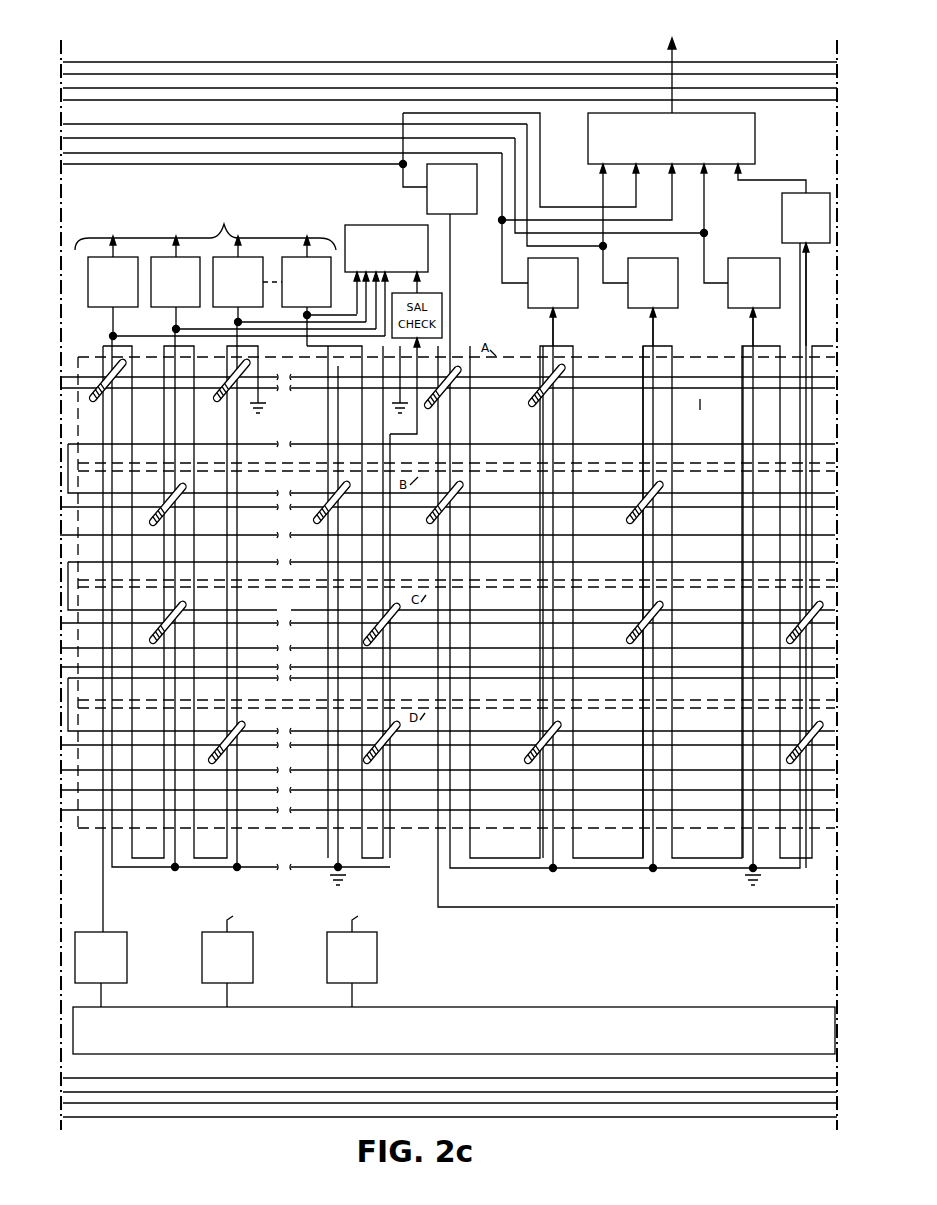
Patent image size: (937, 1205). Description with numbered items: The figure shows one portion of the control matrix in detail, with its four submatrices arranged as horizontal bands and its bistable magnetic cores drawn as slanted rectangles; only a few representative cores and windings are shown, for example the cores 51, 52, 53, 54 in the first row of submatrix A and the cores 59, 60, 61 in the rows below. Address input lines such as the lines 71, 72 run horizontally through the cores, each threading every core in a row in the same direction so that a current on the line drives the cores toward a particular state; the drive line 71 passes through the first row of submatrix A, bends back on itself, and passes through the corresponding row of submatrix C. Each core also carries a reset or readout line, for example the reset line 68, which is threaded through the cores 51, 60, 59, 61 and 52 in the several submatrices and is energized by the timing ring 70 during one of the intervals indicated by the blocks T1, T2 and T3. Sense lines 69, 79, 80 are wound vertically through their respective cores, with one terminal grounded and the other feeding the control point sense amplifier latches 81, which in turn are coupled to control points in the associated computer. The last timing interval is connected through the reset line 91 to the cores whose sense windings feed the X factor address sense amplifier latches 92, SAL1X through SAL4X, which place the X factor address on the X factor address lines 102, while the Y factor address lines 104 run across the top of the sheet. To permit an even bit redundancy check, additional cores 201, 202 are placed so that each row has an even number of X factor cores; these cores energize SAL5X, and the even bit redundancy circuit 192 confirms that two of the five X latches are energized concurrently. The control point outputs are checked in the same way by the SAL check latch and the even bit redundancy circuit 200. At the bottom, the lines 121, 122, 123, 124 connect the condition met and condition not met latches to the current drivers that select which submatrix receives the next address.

The Y factor address lines 104 is at (202, 70).
The X factor address lines 102 is at (298, 126).
The even bit redundancy circuit 192 is at (755, 136).
The X factor address sense amplifier latches 92 is at (427, 210).
The even bit redundancy circuit 200 is at (392, 224).
The control point sense amplifier latches 81 is at (312, 237).
The sense line 69 is at (112, 330).
The sense line 79 is at (178, 316).
The sense line 80 is at (240, 320).
The reset line 68 is at (131, 435).
The address input line 71 is at (156, 594).
The address input line 72 is at (731, 556).
The reset line 91 is at (620, 909).
The core 51 is at (96, 408).
The core 52 is at (218, 408).
The core 53 is at (428, 410).
The core 54 is at (534, 410).
The core 59 is at (150, 522).
The core 60 is at (150, 640).
The core 61 is at (210, 760).
The core 201 is at (790, 630).
The core 202 is at (790, 750).
The timing ring 70 is at (630, 1012).
The line 121 is at (248, 1078).
The line 122 is at (332, 1104).
The line 123 is at (292, 1092).
The line 124 is at (400, 1116).